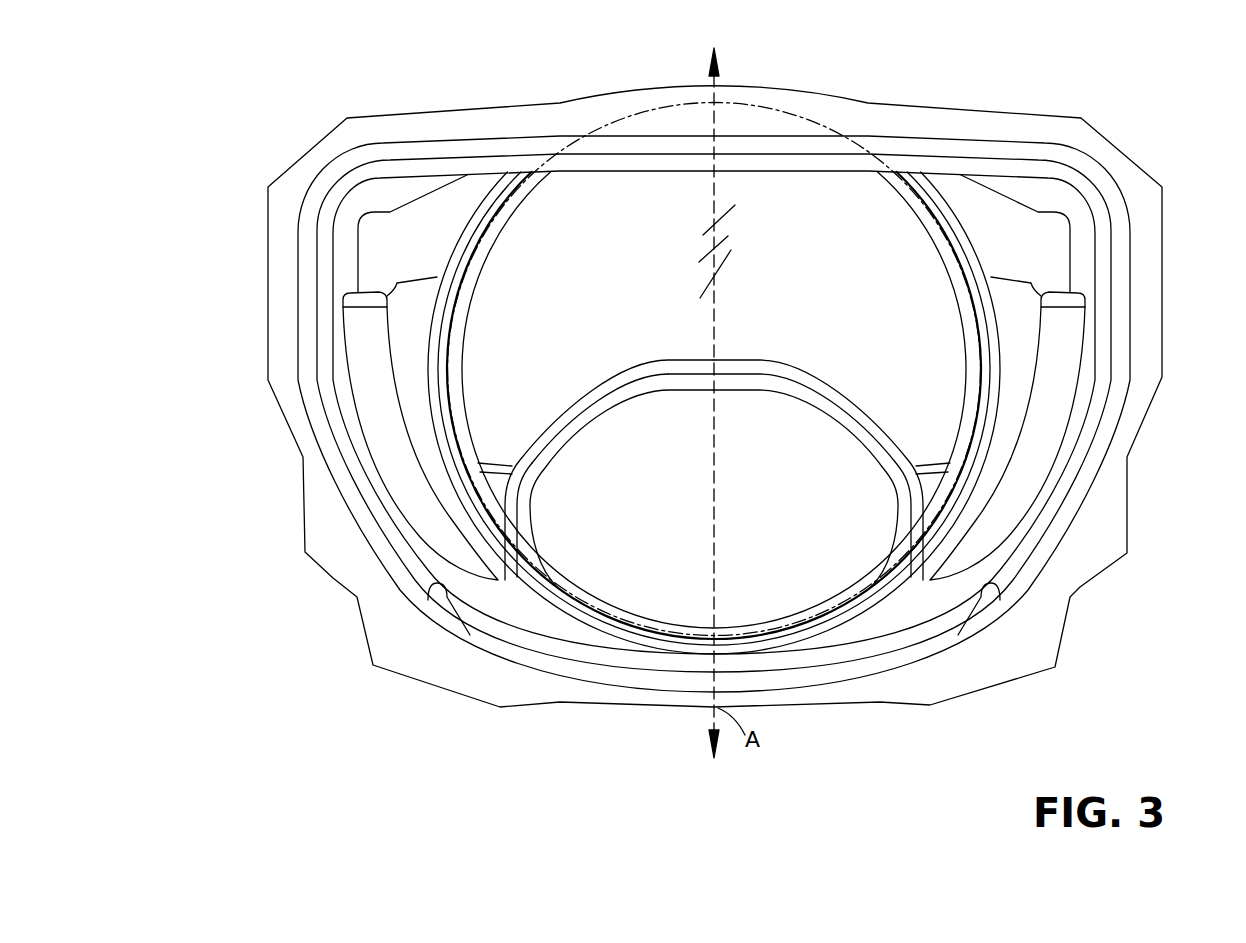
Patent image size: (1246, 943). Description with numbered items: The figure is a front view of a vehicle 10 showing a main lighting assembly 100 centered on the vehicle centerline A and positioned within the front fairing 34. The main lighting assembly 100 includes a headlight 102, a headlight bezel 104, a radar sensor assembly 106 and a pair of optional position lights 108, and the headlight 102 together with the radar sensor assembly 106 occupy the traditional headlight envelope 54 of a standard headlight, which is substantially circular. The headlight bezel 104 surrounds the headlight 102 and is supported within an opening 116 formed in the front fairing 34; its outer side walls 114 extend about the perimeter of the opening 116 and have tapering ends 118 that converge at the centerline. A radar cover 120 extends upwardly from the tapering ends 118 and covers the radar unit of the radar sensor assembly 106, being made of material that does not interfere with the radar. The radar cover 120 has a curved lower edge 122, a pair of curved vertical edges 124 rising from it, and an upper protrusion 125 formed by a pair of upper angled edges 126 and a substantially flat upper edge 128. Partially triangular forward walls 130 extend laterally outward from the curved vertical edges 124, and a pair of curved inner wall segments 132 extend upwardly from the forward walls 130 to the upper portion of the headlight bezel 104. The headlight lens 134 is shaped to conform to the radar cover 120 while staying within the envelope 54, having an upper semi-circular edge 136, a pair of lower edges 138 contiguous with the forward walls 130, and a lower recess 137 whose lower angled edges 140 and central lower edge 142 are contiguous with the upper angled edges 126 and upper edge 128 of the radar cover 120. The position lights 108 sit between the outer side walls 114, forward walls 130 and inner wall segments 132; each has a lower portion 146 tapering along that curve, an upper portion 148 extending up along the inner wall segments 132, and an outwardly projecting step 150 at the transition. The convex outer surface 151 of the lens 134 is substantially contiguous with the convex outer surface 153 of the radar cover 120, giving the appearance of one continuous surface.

The vehicle 10 is at (226, 176).
The front fairing 34 is at (323, 155).
The traditional headlight envelope 54 is at (628, 117).
The main lighting assembly 100 is at (753, 94).
The headlight 102 is at (829, 175).
The headlight bezel 104 is at (1056, 182).
The radar sensor assembly 106 is at (802, 651).
The position lights 108 is at (345, 331).
The outer side walls 114 is at (370, 462).
The opening 116 is at (428, 600).
The tapering ends 118 is at (537, 620).
The radar cover 120 is at (837, 518).
The curved lower edge 122 is at (638, 623).
The curved vertical edges 124 is at (523, 533).
The upper protrusion 125 is at (755, 479).
The upper angled edges 126 is at (590, 430).
The upper edge 128 is at (740, 380).
The forward walls 130 is at (337, 578).
The curved inner wall segments 132 is at (443, 385).
The headlight lens 134 is at (707, 222).
The upper semi-circular edge 136 is at (488, 237).
The lower recess 137 is at (832, 355).
The lower edges 138 is at (493, 460).
The lower angled edges 140 is at (590, 392).
The central lower edge 142 is at (747, 360).
The lower portion 146 is at (1003, 443).
The upper portion 148 is at (995, 240).
The outwardly projecting step 150 is at (1090, 280).
The convex outer surface 151 is at (877, 207).
The convex outer surface 153 is at (657, 630).